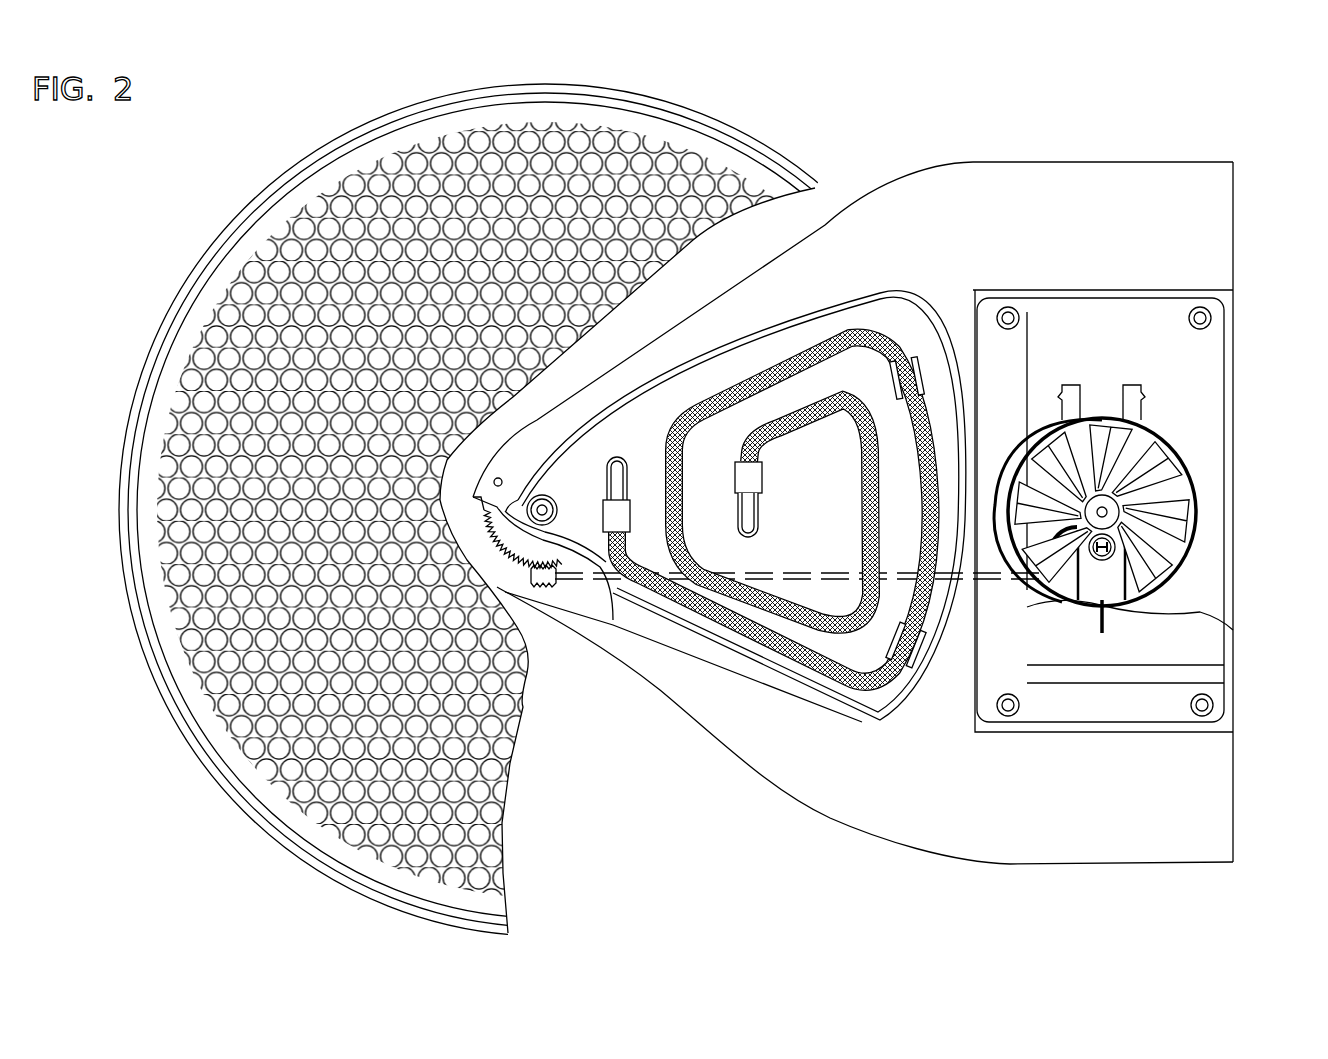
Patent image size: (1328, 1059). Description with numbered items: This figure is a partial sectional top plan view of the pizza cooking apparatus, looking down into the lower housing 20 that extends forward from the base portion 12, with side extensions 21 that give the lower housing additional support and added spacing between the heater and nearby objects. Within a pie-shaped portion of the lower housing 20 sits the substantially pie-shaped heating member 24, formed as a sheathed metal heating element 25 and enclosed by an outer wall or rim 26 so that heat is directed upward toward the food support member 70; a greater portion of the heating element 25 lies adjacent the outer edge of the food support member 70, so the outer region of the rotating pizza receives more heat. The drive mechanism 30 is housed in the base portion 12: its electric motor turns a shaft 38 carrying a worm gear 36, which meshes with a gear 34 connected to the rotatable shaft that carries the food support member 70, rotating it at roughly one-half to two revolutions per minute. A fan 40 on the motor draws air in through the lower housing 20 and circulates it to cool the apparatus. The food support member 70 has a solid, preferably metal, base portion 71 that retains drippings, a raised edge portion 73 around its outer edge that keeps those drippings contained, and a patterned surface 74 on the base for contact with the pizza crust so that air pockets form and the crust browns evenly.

The base portion 12 is at (1237, 640).
The lower housing 20 is at (670, 650).
The side extensions 21 is at (1010, 175).
The heating member 24 is at (767, 477).
The heating element 25 is at (738, 410).
The outer wall or rim 26 is at (895, 310).
The drive mechanism 30 is at (1166, 517).
The gear 34 is at (512, 553).
The worm gear 36 is at (540, 578).
The shaft 38 is at (987, 577).
The fan 40 is at (1180, 440).
The food support member 70 is at (533, 497).
The base portion 71 is at (525, 478).
The raised edge portion 73 is at (545, 510).
The patterned surface 74 is at (590, 135).